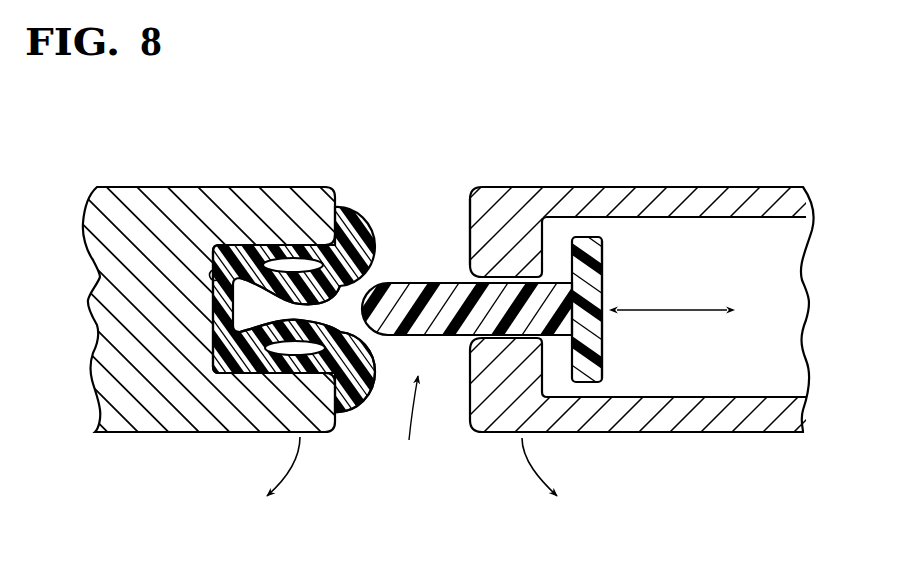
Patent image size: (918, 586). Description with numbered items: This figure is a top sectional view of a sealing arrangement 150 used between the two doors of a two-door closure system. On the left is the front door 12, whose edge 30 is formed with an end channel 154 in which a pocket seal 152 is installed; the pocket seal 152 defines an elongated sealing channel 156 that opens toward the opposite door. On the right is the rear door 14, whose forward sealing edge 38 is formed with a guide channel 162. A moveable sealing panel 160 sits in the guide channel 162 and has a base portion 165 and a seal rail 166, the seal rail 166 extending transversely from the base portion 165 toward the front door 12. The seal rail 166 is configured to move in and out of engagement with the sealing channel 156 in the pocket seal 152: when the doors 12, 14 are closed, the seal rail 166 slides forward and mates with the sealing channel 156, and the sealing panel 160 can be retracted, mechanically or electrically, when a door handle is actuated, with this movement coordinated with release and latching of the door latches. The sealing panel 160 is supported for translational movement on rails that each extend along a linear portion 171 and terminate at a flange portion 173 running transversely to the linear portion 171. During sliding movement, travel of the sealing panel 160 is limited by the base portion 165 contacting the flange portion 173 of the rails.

The front door 12 is at (124, 181).
The rear door 14 is at (760, 173).
The edge 30 is at (338, 414).
The forward sealing edge 38 is at (469, 222).
The sealing arrangement 150 is at (408, 420).
The pocket seal 152 is at (237, 241).
The end channel 154 is at (211, 280).
The sealing channel 156 is at (241, 302).
The moveable sealing panel 160 is at (594, 234).
The guide channel 162 is at (688, 396).
The base portion 165 is at (603, 272).
The seal rail 166 is at (396, 300).
The linear portion 171 is at (558, 196).
The flange portion 173 is at (480, 245).